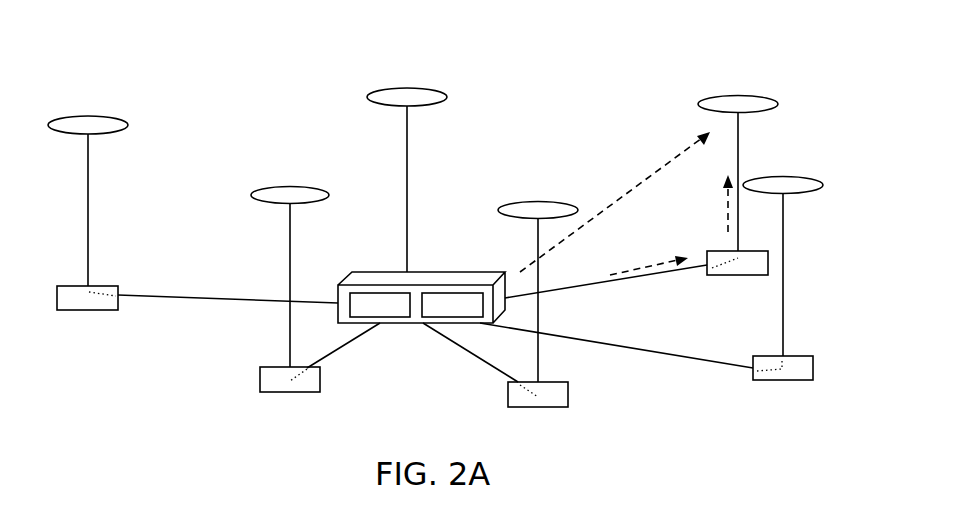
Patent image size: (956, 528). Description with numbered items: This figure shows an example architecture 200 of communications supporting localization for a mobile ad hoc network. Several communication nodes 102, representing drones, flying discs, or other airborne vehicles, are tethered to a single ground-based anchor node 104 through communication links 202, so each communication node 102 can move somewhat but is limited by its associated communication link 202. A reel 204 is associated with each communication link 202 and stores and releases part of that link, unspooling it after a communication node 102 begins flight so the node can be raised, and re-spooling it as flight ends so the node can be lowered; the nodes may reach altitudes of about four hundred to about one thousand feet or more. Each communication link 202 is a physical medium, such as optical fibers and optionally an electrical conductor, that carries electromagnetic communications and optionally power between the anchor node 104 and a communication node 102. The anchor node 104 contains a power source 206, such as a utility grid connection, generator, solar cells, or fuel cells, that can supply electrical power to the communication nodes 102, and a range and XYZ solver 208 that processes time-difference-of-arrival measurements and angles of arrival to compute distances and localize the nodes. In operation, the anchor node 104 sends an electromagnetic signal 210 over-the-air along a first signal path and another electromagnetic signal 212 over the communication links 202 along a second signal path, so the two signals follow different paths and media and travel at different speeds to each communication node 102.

The drone network environment 200 is at (203, 82).
The communication node 102 is at (741, 85).
The anchor node 104 is at (378, 262).
The communication link 202 is at (641, 358).
The reel 204 is at (80, 320).
The power source 206 is at (380, 305).
The range and XYZ solver 208 is at (452, 305).
The electromagnetic signal 210 is at (645, 167).
The electromagnetic signal 212 is at (716, 230).